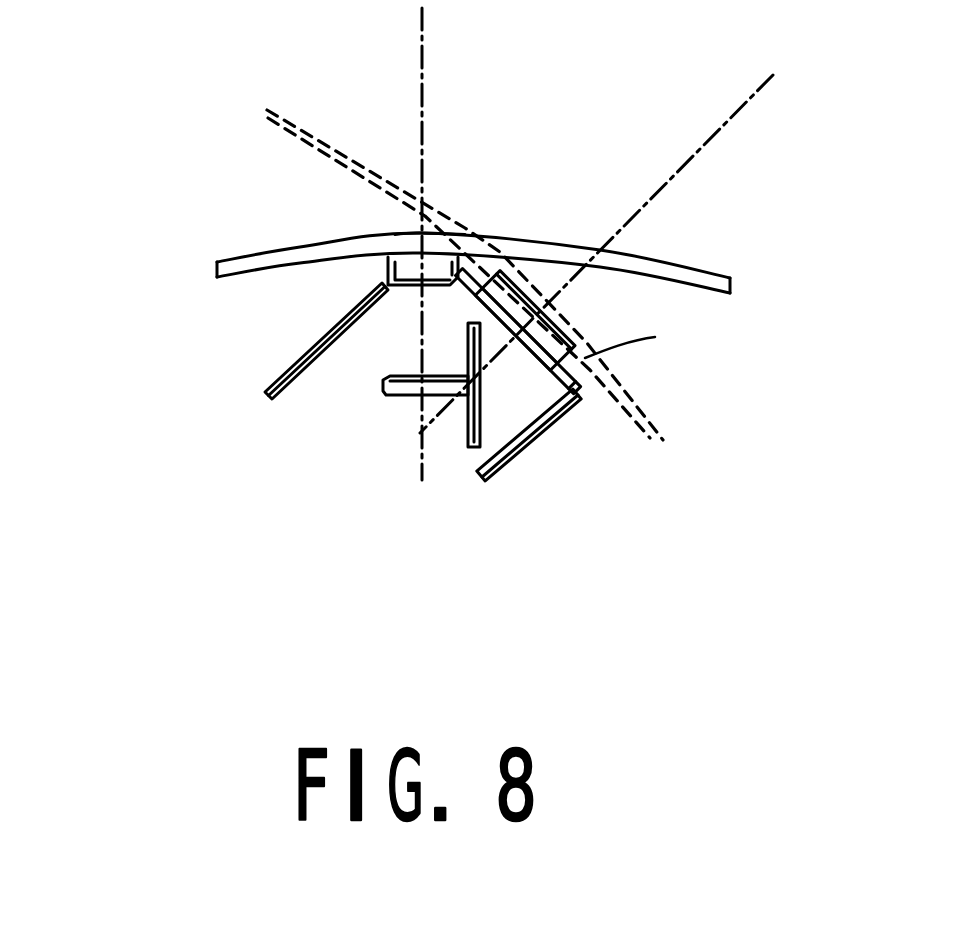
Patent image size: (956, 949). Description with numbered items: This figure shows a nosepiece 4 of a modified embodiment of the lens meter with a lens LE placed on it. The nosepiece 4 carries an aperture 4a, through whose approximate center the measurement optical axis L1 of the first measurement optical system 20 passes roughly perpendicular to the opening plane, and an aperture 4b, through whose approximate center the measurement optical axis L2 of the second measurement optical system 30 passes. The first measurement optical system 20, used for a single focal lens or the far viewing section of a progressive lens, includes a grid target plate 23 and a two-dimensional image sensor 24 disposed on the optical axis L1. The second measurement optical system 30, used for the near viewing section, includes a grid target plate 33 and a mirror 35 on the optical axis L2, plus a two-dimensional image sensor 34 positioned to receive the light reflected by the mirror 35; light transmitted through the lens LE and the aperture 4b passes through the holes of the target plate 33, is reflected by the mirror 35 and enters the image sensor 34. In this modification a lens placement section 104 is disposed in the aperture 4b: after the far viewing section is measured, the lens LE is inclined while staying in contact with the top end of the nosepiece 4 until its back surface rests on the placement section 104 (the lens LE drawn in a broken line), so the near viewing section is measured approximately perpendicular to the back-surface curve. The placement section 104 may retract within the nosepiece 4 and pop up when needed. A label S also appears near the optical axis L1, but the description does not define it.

The nosepiece 4 is at (387, 263).
The aperture 4a is at (455, 200).
The aperture 4b is at (566, 264).
The first measurement optical system 20 is at (232, 101).
The grid target plate 23 is at (393, 287).
The two-dimensional image sensor 24 is at (397, 394).
The second measurement optical system 30 is at (770, 184).
The grid target plate 33 is at (527, 363).
The two-dimensional image sensor 34 is at (520, 456).
The mirror 35 is at (469, 447).
The lens placement section 104 is at (666, 340).
The focal point S is at (420, 443).
The lens LE is at (372, 234).
The measurement optical axis L1 is at (420, 58).
The measurement optical axis L2 is at (695, 152).